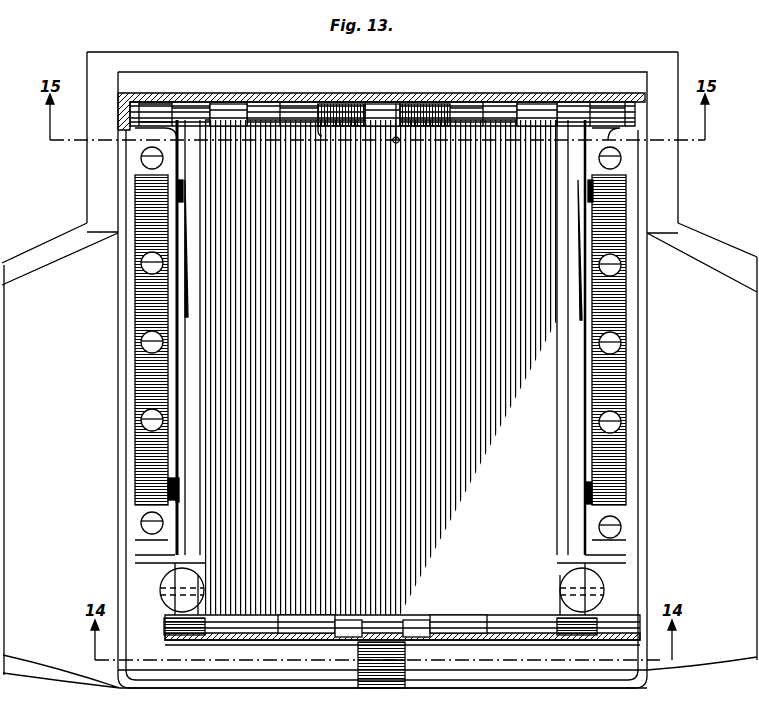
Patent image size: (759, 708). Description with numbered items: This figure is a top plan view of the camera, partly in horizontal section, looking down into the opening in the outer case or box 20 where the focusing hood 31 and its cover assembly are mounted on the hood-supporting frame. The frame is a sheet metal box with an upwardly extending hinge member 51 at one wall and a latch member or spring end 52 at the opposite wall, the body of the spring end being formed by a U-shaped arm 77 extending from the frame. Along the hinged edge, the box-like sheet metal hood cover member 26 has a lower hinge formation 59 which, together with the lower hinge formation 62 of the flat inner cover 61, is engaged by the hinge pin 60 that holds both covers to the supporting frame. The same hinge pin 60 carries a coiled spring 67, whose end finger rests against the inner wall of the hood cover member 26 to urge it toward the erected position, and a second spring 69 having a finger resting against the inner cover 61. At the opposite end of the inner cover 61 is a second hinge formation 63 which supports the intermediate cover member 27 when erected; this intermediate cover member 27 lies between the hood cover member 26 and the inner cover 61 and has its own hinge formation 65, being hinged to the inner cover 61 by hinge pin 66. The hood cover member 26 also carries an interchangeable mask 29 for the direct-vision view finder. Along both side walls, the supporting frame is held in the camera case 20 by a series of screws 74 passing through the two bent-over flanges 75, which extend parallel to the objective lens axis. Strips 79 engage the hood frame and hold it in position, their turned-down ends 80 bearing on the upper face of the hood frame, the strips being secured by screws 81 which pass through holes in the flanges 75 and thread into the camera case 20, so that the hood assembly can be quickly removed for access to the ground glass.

The outer case or box 20 is at (48, 652).
The hood cover member 26 is at (632, 118).
The intermediate cover member 27 is at (574, 636).
The mask 29 is at (177, 104).
The focusing hood 31 is at (205, 364).
The hinge member 51 is at (195, 108).
The latch member or spring end 52 is at (395, 678).
The hinge formation 59 is at (150, 104).
The hinge pin 60 is at (397, 142).
The inner cover 61 is at (548, 364).
The lower hinge formation 62 is at (230, 108).
The second hinge formation 63 is at (250, 636).
The hinge formation 65 is at (420, 620).
The hinge pin 66 is at (163, 628).
The coiled spring 67 is at (426, 108).
The second spring 69 is at (342, 108).
The screws 74 is at (142, 158).
The bent-over flanges 75 is at (138, 540).
The U-shaped arm 77 is at (400, 650).
The strips 79 is at (138, 302).
The turned-down ends 80 is at (184, 190).
The screws 81 is at (142, 268).